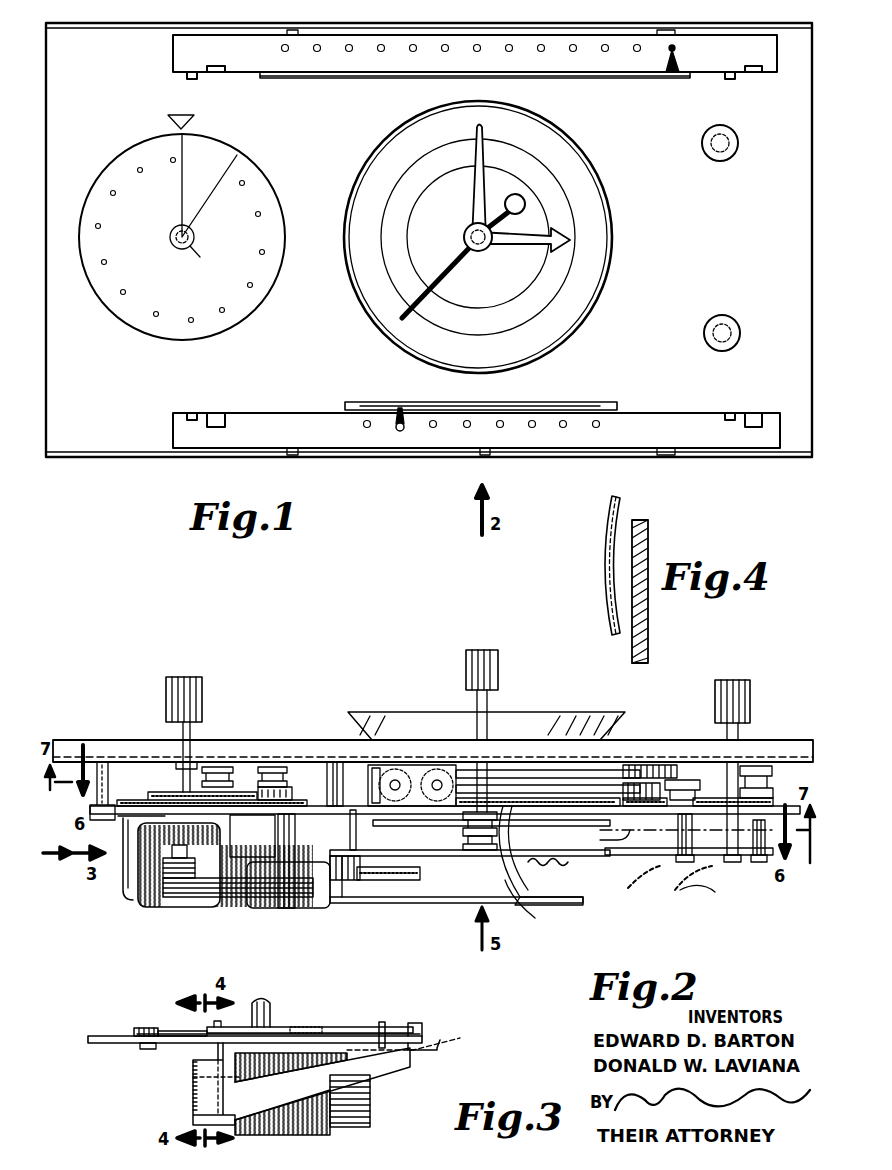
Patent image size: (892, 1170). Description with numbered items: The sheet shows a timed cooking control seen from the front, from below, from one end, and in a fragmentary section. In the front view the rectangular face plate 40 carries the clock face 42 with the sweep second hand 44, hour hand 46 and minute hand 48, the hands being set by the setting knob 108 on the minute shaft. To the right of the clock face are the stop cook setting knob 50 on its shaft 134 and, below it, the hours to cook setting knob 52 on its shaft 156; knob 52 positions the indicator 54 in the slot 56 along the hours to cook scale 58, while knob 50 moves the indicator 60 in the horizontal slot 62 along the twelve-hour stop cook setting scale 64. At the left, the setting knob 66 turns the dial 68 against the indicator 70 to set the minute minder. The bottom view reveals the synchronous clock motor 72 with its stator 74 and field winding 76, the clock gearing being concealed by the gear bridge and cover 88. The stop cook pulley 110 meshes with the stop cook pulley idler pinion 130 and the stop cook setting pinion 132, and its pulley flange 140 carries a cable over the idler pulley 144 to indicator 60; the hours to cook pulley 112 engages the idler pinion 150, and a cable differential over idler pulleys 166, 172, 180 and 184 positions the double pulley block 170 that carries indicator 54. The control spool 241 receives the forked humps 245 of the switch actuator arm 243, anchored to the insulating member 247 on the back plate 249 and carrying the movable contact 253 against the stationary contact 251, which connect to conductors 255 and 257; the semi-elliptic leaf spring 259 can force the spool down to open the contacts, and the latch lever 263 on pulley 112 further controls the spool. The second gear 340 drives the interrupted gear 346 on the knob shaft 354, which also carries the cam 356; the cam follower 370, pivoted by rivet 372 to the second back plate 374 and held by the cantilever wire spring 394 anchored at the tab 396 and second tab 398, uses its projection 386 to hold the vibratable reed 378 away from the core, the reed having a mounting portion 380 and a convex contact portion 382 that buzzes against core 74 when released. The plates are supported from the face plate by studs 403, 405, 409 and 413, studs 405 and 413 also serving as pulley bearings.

In FIG. 1, the face plate 40 is at (96, 440).
In FIG. 2, the face plate 40 is at (100, 745).
In FIG. 1, the clock face 42 is at (598, 279).
In FIG. 2, the clock face 42 is at (388, 728).
In FIG. 1, the sweep second hand 44 is at (441, 281).
In FIG. 1, the hour hand 46 is at (522, 251).
In FIG. 1, the minute hand 48 is at (471, 198).
In FIG. 1, the stop cook setting knob 50 is at (709, 158).
In FIG. 1, the hours to cook setting knob 52 is at (731, 320).
In FIG. 2, the hours to cook setting knob 52 is at (737, 678).
In FIG. 1, the indicator 54 is at (400, 403).
In FIG. 1, the slot 56 is at (575, 405).
In FIG. 1, the hours to cook scale 58 is at (641, 418).
In FIG. 1, the indicator 60 is at (677, 52).
In FIG. 1, the horizontal slot 62 is at (597, 79).
In FIG. 1, the stop cook setting scale 64 is at (263, 47).
In FIG. 1, the setting knob 66 is at (207, 261).
In FIG. 2, the setting knob 66 is at (184, 676).
In FIG. 1, the dial 68 is at (231, 326).
In FIG. 1, the indicator 70 is at (186, 118).
In FIG. 2, the synchronous clock motor 72 is at (300, 909).
In FIG. 4, the stator 74 is at (643, 519).
In FIG. 2, the stator 74 is at (262, 898).
In FIG. 3, the stator 74 is at (372, 1093).
In FIG. 2, the field winding 76 is at (198, 908).
In FIG. 3, the field winding 76 is at (345, 1131).
In FIG. 2, the gear bridge and cover 88 is at (448, 906).
In FIG. 1, the setting knob 108 is at (464, 238).
In FIG. 2, the setting knob 108 is at (498, 664).
In FIG. 2, the stop cook pulley 110 is at (507, 790).
In FIG. 2, the hours to cook pulley 112 is at (425, 785).
In FIG. 2, the stop cook pulley idler pinion 130 is at (648, 765).
In FIG. 2, the stop cook setting pinion 132 is at (778, 775).
In FIG. 1, the shaft 134 is at (732, 139).
In FIG. 2, the pulley flange 140 is at (522, 785).
In FIG. 2, the idler pulley 144 is at (220, 766).
In FIG. 2, the idler pinion 150 is at (637, 858).
In FIG. 1, the shaft 156 is at (739, 334).
In FIG. 2, the shaft 156 is at (740, 738).
In FIG. 2, the idler pulley 166 is at (278, 816).
In FIG. 2, the double pulley block 170 is at (380, 780).
In FIG. 2, the second idler pulley 172 is at (272, 766).
In FIG. 2, the idler pulley 180 is at (678, 780).
In FIG. 2, the idler pulley 184 is at (652, 892).
In FIG. 2, the control spool 241 is at (462, 832).
In FIG. 2, the switch actuator arm 243 is at (545, 906).
In FIG. 2, the humps 245 is at (484, 851).
In FIG. 2, the member 247 is at (757, 864).
In FIG. 2, the back plate 249 is at (362, 885).
In FIG. 2, the stationary contact 251 is at (545, 866).
In FIG. 2, the movable contact 253 is at (548, 836).
In FIG. 2, the conductor 255 is at (680, 862).
In FIG. 2, the conductor 257 is at (707, 886).
In FIG. 2, the semi-elliptic leaf spring 259 is at (460, 880).
In FIG. 2, the latch lever 263 is at (530, 925).
In FIG. 2, the second gear 340 is at (155, 806).
In FIG. 2, the interrupted gear 346 is at (130, 792).
In FIG. 1, the knob shaft 354 is at (177, 231).
In FIG. 2, the knob shaft 354 is at (192, 735).
In FIG. 3, the cam 356 is at (321, 1027).
In FIG. 3, the cam follower 370 is at (176, 1030).
In FIG. 3, the rivet 372 is at (134, 1032).
In FIG. 2, the second back plate 374 is at (360, 818).
In FIG. 3, the second back plate 374 is at (108, 1044).
In FIG. 4, the vibratable reed 378 is at (611, 531).
In FIG. 2, the vibratable reed 378 is at (125, 880).
In FIG. 3, the vibratable reed 378 is at (412, 1056).
In FIG. 3, the mounting portion 380 is at (418, 1035).
In FIG. 4, the convex contact portion 382 is at (612, 562).
In FIG. 2, the convex contact portion 382 is at (128, 888).
In FIG. 3, the convex contact portion 382 is at (200, 1090).
In FIG. 3, the projection 386 is at (240, 1025).
In FIG. 3, the cantilever wire spring 394 is at (346, 1026).
In FIG. 3, the tab 396 is at (415, 1024).
In FIG. 3, the second tab 398 is at (398, 1012).
In FIG. 2, the stud 403 is at (108, 762).
In FIG. 2, the stud 405 is at (290, 786).
In FIG. 2, the stud 409 is at (335, 760).
In FIG. 2, the stud 413 is at (696, 896).